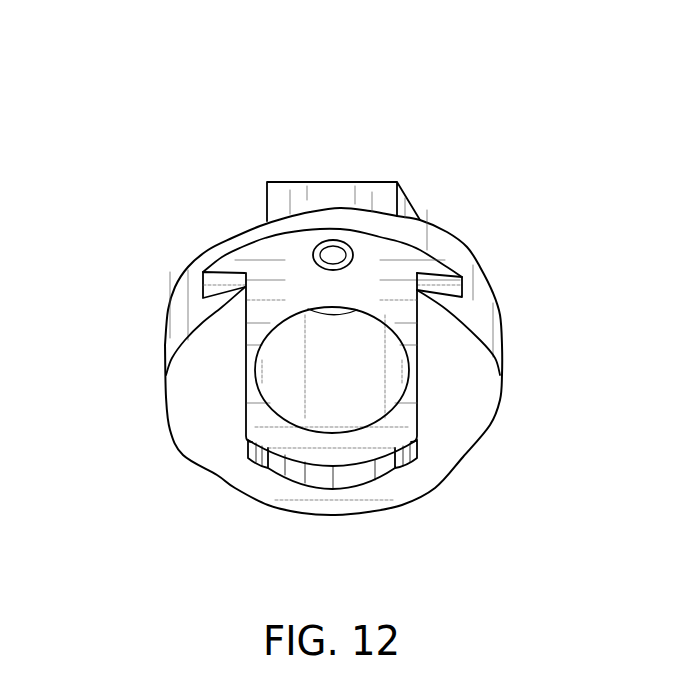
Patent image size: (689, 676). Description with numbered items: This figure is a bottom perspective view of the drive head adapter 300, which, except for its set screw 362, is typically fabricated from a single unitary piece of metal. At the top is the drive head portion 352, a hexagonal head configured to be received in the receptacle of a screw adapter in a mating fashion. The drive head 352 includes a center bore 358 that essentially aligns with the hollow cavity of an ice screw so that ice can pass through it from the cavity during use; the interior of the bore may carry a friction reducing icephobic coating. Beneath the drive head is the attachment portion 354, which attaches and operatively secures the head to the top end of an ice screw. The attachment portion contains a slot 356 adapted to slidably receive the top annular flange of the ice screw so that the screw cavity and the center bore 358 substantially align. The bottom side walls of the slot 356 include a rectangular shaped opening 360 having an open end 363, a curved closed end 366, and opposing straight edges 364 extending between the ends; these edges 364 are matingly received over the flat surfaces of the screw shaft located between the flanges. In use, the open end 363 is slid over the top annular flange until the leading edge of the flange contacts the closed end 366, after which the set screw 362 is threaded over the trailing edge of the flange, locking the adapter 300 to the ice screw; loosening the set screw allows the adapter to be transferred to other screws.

The drive head adapter 300 is at (484, 116).
The drive head portion 352 is at (345, 180).
The attachment portion 354 is at (483, 322).
The slot 356 is at (222, 270).
The center bore 358 is at (293, 393).
The rectangular shaped opening 360 is at (273, 261).
The set screw 362 is at (365, 262).
The open end 363 is at (425, 210).
The opposing straight edges 364 is at (215, 374).
The curved closed end 366 is at (333, 470).